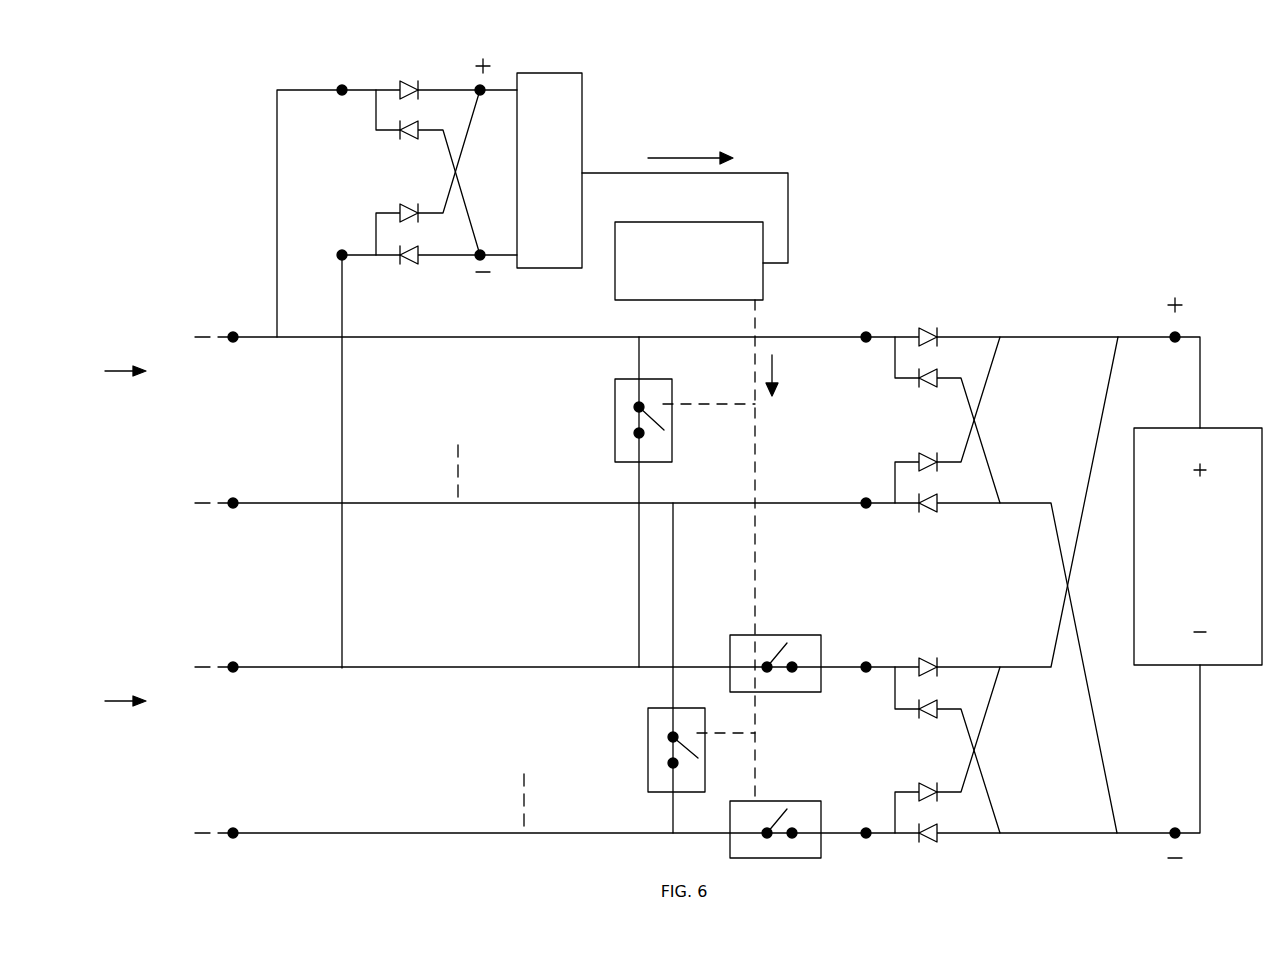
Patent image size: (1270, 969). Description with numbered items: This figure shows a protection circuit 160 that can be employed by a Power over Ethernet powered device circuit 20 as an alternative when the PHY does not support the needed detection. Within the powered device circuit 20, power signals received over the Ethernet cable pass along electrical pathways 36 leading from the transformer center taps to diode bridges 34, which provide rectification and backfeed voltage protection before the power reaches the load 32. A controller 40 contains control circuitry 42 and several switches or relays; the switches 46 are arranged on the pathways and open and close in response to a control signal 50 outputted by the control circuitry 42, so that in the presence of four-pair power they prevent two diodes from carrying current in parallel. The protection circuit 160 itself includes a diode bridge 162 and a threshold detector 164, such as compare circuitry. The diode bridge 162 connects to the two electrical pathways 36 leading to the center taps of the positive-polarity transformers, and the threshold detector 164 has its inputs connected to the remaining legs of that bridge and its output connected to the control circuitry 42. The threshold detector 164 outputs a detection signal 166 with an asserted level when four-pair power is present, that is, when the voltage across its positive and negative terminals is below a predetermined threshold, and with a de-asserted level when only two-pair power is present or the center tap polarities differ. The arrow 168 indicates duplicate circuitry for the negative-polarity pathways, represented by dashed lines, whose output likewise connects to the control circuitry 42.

The powered device circuit 20 is at (1199, 78).
The load 32 is at (1198, 546).
The diode bridges 34 is at (992, 211).
The electrical pathways 36 is at (864, 273).
The controller 40 is at (829, 194).
The control circuitry 42 is at (689, 261).
The switches 46 is at (828, 629).
The control signal 50 is at (777, 372).
The protection circuit 160 is at (227, 98).
The diode bridge 162 is at (352, 156).
The threshold detector 164 is at (549, 170).
The detection signal 166 is at (690, 155).
The duplicate circuitry 168 is at (432, 431).